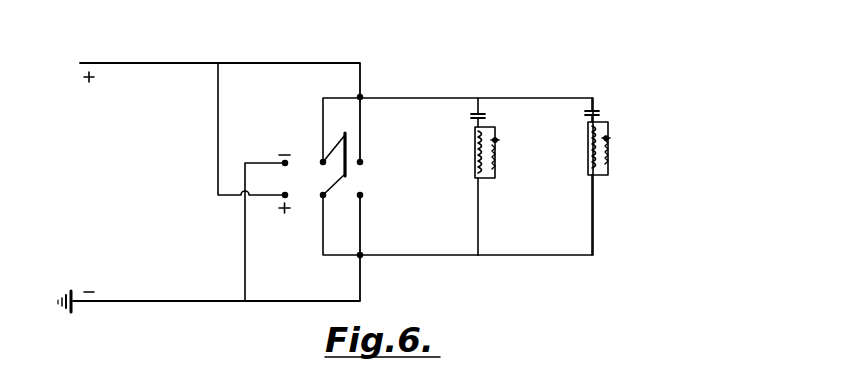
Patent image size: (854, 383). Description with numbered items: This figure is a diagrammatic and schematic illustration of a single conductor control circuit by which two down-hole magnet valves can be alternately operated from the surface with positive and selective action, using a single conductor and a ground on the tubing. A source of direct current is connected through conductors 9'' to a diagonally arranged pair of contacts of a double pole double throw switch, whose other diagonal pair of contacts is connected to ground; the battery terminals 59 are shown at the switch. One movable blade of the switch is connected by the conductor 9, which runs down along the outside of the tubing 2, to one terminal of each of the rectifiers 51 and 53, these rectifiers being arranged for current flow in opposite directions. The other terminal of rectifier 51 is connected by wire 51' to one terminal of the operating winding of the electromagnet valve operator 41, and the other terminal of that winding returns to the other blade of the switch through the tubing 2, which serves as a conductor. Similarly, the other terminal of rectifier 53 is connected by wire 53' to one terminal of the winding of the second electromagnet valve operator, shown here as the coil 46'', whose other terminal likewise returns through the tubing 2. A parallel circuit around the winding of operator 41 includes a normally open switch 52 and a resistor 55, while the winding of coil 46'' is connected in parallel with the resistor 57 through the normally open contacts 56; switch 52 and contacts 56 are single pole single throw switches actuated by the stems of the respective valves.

The tubing 2 is at (418, 256).
The conductor 9 is at (456, 157).
The conductors 9'' is at (232, 187).
The battery terminals 59 is at (316, 139).
The electromagnet valve operator 41 is at (472, 160).
The coil 46'' is at (576, 188).
The rectifier 51 is at (456, 126).
The wire 51' is at (505, 108).
The normally open switch 52 is at (505, 137).
The rectifier 53 is at (622, 102).
The wire 53' is at (625, 111).
The resistor 55 is at (498, 167).
The normally open contacts 56 is at (611, 137).
The resistor 57 is at (612, 160).